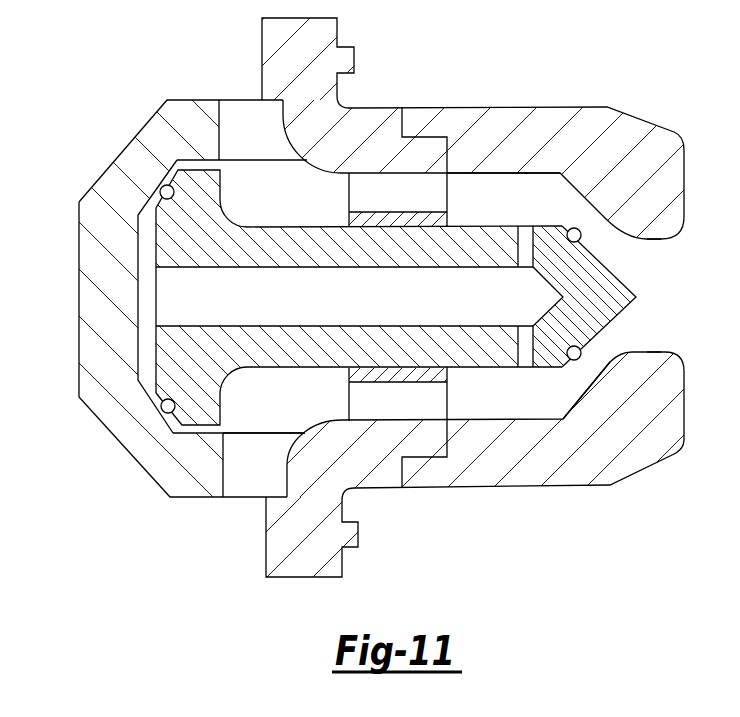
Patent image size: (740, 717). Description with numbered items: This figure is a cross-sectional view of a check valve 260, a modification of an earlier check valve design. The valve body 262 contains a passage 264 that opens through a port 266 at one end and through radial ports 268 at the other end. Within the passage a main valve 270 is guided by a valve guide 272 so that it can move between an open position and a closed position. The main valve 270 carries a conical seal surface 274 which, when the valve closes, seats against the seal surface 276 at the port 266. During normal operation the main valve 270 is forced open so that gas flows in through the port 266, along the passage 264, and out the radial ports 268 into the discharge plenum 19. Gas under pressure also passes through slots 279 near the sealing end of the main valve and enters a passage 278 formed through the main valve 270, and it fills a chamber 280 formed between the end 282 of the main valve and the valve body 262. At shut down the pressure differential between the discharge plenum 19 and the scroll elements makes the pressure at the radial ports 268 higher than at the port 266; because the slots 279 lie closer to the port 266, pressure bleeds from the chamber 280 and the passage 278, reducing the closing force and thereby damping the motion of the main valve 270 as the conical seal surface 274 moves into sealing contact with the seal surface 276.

The discharge plenum 19 is at (52, 291).
The check valve 260 is at (458, 92).
The valve body 262 is at (638, 446).
The passage 264 is at (500, 209).
The port 266 is at (695, 284).
The radial ports 268 is at (233, 110).
The main valve 270 is at (213, 240).
The valve guide 272 is at (365, 212).
The conical seal surface 274 is at (613, 320).
The seal surface 276 is at (587, 387).
The passage 278 is at (392, 309).
The slots 279 is at (526, 233).
The chamber 280 is at (148, 321).
The end 282 is at (223, 373).